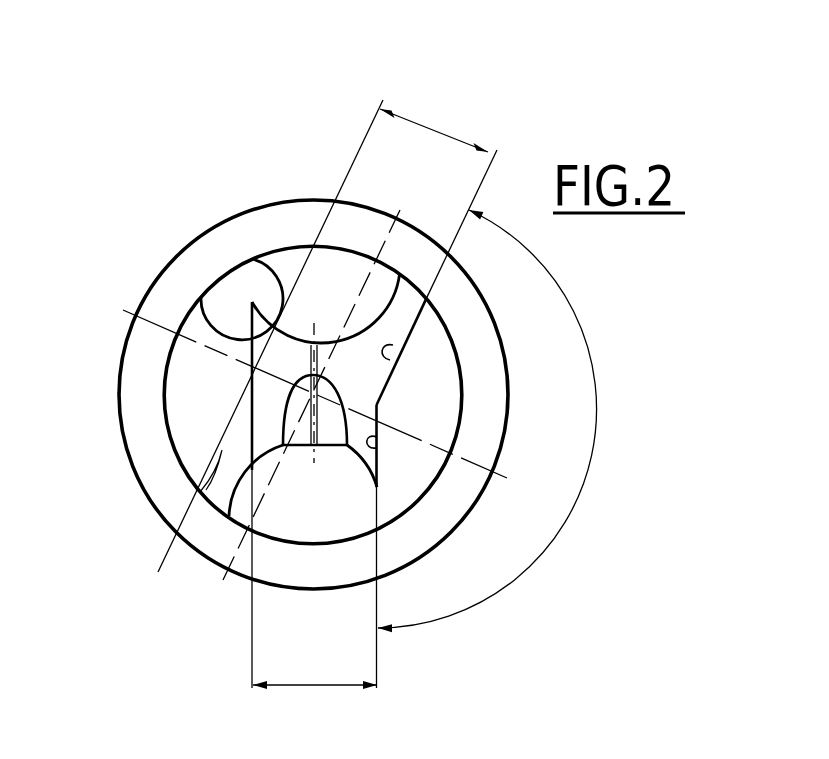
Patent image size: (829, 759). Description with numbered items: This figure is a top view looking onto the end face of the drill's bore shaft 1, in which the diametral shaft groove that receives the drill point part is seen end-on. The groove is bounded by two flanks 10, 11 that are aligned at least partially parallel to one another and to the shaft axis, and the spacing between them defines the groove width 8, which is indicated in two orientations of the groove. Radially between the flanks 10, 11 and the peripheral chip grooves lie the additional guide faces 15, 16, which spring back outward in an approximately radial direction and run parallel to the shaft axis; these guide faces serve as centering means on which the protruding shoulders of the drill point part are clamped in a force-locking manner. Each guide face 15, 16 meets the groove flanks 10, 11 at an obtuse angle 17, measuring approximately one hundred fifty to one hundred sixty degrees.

The bore shaft 1 is at (458, 315).
The groove width 8 is at (443, 128).
The flank of shaft groove 10 is at (258, 355).
The flank of shaft groove 11 is at (396, 348).
The guide face 15 is at (252, 259).
The guide face 16 is at (378, 437).
The obtuse angle 17 is at (602, 405).